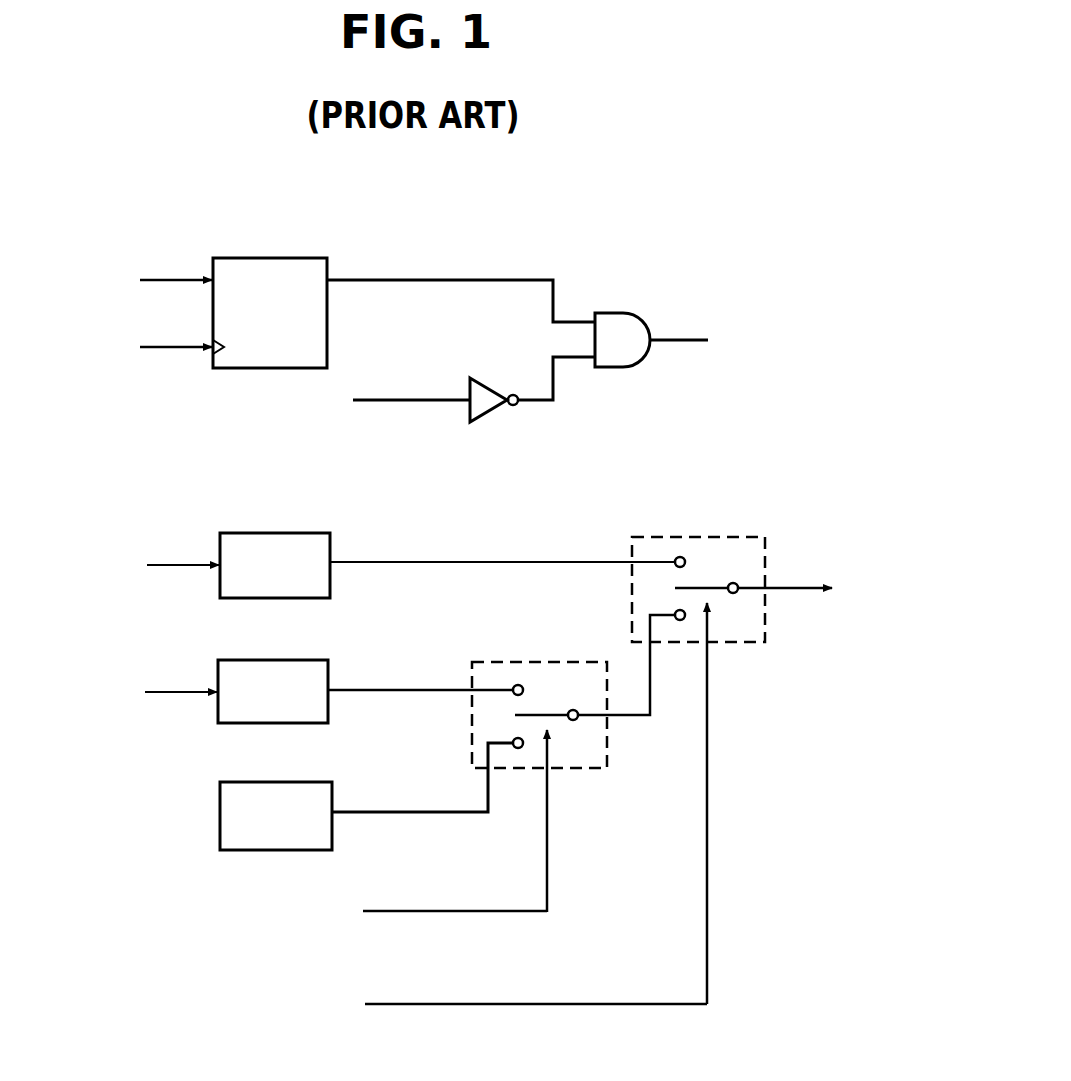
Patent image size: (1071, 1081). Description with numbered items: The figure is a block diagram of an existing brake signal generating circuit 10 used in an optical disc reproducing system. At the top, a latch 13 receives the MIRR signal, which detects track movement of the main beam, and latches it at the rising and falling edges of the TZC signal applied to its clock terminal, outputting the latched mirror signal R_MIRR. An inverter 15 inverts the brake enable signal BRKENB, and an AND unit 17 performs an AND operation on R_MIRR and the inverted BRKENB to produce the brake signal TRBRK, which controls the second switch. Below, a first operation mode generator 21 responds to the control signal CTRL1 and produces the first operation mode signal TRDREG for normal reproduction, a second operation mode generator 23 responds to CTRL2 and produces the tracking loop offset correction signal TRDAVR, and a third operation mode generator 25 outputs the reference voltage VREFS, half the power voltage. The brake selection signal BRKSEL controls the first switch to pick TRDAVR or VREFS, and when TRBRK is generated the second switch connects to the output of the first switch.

The prior art write current control circuit 10 is at (740, 216).
The latch 13 is at (275, 258).
The inverter 15 is at (493, 413).
The AND unit 17 is at (622, 310).
The first operation mode generator 21 is at (278, 533).
The second operation mode generator 23 is at (278, 660).
The third operation mode generator 25 is at (280, 782).